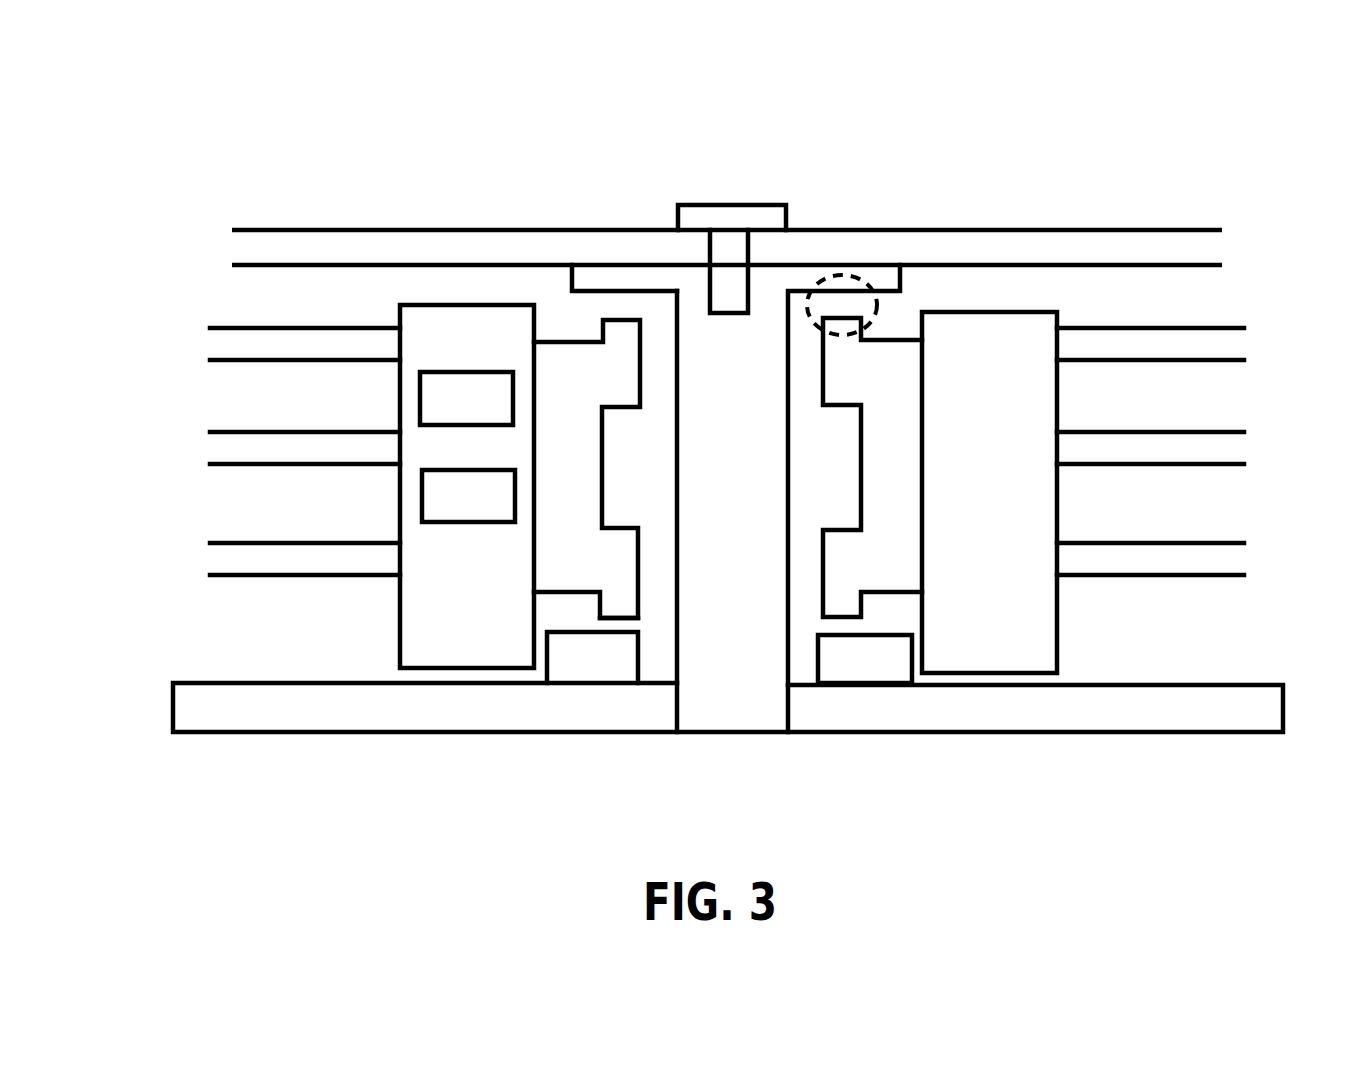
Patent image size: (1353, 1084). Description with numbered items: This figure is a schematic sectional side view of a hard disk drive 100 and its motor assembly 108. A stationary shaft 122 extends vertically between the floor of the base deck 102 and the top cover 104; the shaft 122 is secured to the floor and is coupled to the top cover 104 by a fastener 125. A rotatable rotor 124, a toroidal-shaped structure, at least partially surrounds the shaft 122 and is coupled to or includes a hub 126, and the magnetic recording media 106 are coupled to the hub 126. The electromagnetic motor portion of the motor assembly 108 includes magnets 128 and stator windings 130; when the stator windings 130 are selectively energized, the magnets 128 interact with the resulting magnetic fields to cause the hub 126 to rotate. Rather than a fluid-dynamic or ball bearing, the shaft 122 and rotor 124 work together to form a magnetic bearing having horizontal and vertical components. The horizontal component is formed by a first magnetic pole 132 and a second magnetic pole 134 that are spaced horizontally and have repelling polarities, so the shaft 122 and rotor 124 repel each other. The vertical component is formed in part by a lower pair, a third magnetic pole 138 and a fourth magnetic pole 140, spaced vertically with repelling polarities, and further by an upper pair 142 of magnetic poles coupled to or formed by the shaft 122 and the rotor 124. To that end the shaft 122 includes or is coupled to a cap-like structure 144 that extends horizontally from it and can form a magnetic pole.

The hard disk drive 100 is at (208, 166).
The base deck 102 is at (243, 718).
The top cover 104 is at (368, 238).
The magnetic recording media 106 is at (332, 355).
The motor assembly 108 is at (868, 196).
The shaft 122 is at (762, 514).
The rotor 124 is at (907, 576).
The fastener 125 is at (740, 208).
The hub 126 is at (1017, 411).
The magnets 128 is at (466, 398).
The stator windings 130 is at (468, 496).
The first magnetic pole 132 is at (680, 338).
The second magnetic pole 134 is at (637, 345).
The third magnetic pole 138 is at (565, 636).
The fourth magnetic pole 140 is at (620, 622).
The upper pair of magnetic poles 142 is at (880, 305).
The cap-like structure 144 is at (610, 278).